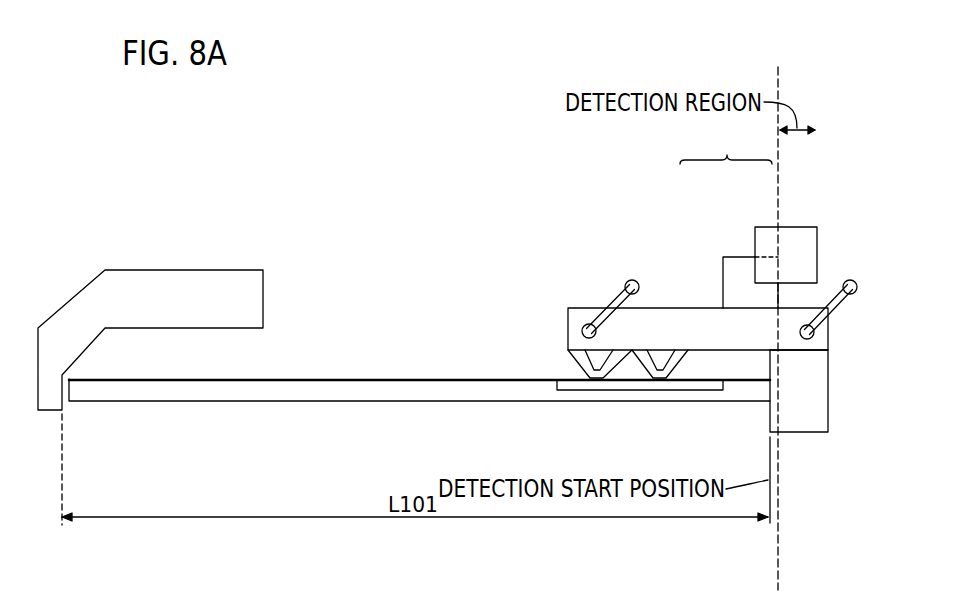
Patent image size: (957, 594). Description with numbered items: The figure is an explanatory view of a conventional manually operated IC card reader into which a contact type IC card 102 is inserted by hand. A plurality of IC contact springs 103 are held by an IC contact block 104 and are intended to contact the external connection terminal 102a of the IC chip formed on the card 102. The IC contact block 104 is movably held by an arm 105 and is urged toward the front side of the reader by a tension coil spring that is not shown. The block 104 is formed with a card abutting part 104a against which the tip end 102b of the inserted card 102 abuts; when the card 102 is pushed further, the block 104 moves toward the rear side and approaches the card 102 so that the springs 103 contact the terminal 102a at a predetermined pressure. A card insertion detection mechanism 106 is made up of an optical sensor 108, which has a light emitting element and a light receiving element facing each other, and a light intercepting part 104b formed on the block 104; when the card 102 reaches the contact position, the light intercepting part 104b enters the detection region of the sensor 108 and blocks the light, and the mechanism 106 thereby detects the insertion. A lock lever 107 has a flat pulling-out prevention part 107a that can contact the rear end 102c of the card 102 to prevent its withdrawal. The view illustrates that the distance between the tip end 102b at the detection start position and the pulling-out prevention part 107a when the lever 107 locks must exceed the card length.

The IC card 102 is at (368, 378).
The external connection terminal 102a is at (557, 378).
The tip end 102b is at (777, 389).
The rear end 102c is at (63, 393).
The IC contact spring 103 is at (597, 379).
The IC contact block 104 is at (580, 307).
The card abutting part 104a is at (803, 433).
The light intercepting part 104b is at (738, 257).
The arm 105 is at (622, 284).
The card insertion detection mechanism 106 is at (726, 146).
The lock lever 107 is at (175, 268).
The pulling-out prevention part 107a is at (71, 386).
The optical sensor 108 is at (768, 227).